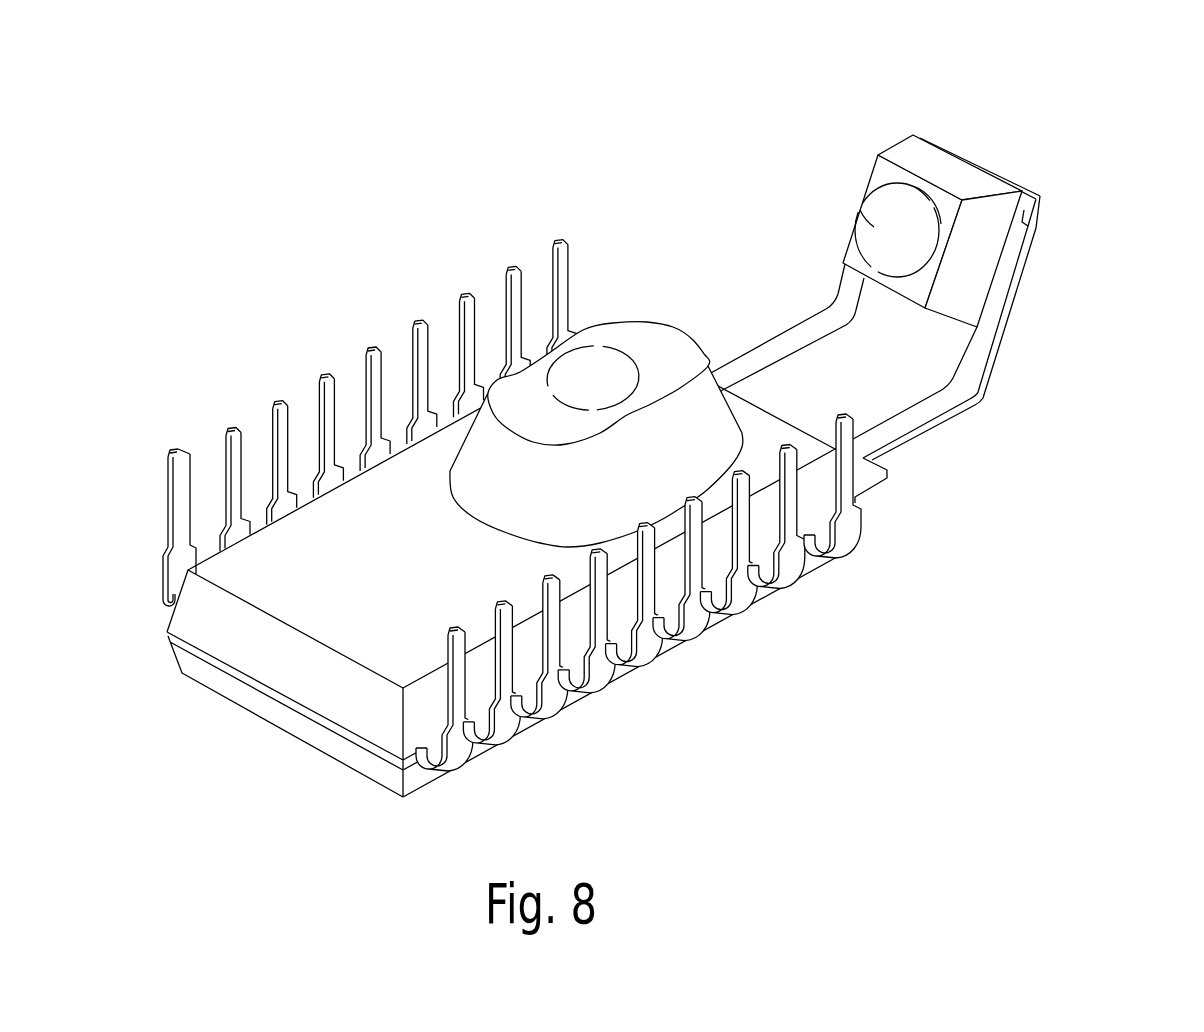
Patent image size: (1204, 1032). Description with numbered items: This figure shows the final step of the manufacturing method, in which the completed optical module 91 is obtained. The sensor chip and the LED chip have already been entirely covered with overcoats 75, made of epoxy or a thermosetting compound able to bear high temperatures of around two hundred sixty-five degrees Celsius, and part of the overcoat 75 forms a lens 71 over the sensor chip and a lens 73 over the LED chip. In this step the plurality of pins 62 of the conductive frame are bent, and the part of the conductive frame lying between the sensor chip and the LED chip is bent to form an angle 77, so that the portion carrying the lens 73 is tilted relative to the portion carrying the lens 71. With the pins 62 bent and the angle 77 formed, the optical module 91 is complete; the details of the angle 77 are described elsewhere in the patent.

The pins 62 is at (165, 420).
The lens 71 is at (598, 358).
The lens 73 is at (863, 208).
The overcoat 75 is at (287, 663).
The angle 77 is at (961, 342).
The optical module 91 is at (680, 419).